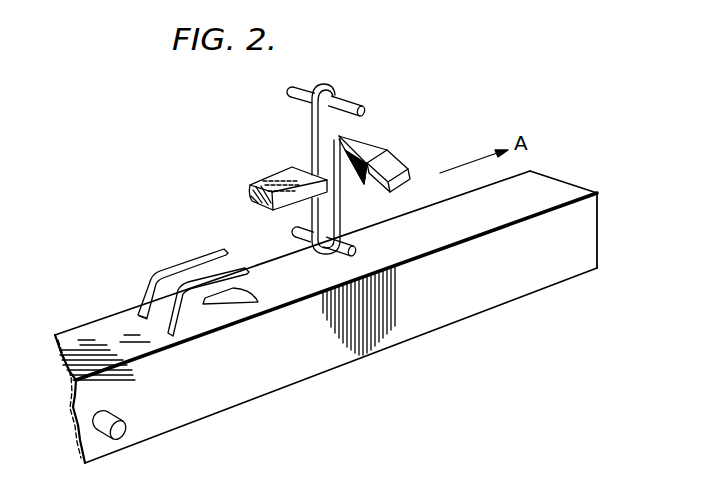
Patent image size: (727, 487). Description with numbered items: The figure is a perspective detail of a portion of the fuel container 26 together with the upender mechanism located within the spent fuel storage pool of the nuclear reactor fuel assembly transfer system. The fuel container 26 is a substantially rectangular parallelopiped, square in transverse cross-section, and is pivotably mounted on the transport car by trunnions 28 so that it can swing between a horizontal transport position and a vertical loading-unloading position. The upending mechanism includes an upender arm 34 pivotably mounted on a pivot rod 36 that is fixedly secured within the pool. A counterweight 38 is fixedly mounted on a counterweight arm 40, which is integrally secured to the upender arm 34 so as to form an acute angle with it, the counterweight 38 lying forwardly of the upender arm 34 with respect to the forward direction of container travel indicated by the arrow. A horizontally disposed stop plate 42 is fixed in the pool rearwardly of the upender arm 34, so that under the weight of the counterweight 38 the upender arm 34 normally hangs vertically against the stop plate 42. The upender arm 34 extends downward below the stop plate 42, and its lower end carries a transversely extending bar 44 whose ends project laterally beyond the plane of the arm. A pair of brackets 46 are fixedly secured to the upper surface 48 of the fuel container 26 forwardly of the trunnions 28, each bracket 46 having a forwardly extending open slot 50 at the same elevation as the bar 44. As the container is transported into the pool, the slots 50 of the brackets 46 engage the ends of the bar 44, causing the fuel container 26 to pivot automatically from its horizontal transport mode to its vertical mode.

The fuel container 26 is at (242, 379).
The trunnions 28 is at (117, 417).
The upender arm 34 is at (333, 186).
The pivot rod 36 is at (357, 105).
The counterweight 38 is at (396, 165).
The counterweight arm 40 is at (366, 140).
The stop plate 42 is at (283, 178).
The bar 44 is at (334, 255).
The brackets 46 is at (162, 324).
The upper surface 48 is at (288, 296).
The open slot 50 is at (248, 288).